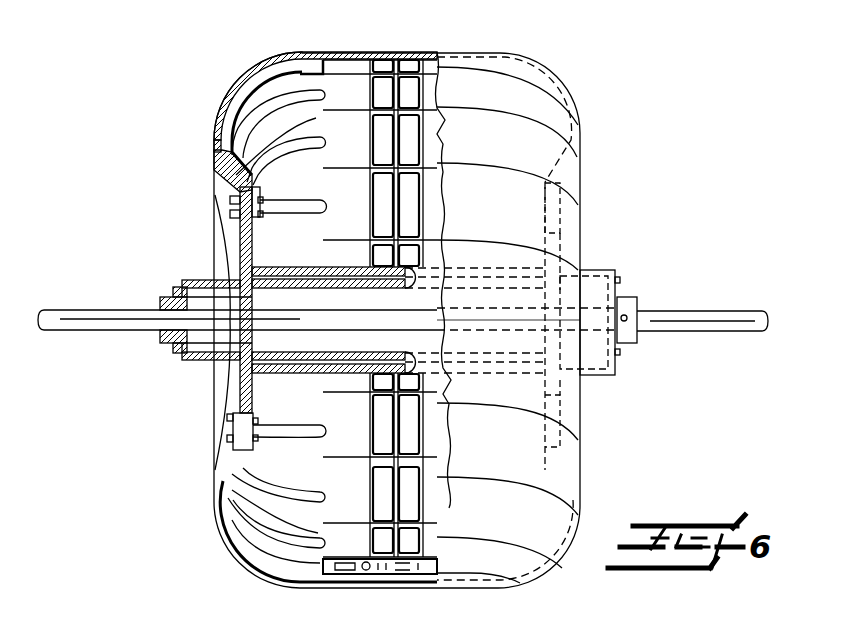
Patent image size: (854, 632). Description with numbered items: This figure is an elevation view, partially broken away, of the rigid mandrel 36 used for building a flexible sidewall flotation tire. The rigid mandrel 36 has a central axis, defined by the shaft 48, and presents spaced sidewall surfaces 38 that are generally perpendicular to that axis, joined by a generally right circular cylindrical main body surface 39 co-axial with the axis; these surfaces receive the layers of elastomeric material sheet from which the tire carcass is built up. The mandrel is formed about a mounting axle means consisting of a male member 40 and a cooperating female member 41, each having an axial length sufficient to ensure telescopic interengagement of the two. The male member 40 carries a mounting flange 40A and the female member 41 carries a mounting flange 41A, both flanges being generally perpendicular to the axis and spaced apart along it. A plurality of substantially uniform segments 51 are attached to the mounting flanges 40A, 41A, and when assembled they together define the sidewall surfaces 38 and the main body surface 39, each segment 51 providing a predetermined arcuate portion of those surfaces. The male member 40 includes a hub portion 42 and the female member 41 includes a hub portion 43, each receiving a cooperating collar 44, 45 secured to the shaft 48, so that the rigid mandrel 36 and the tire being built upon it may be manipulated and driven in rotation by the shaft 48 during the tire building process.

The rigid mandrel 36 is at (613, 167).
The sidewall surfaces 38 is at (213, 200).
The main body surface 39 is at (517, 40).
The male member 40 is at (352, 364).
The mounting flange 40A is at (240, 200).
The female member 41 is at (350, 268).
The mounting flange 41A is at (583, 196).
The hub portion 42 is at (214, 276).
The hub portion 43 is at (592, 270).
The collar 44 is at (163, 340).
The collar 45 is at (625, 340).
The shaft 48 is at (102, 312).
The segments 51 is at (213, 405).